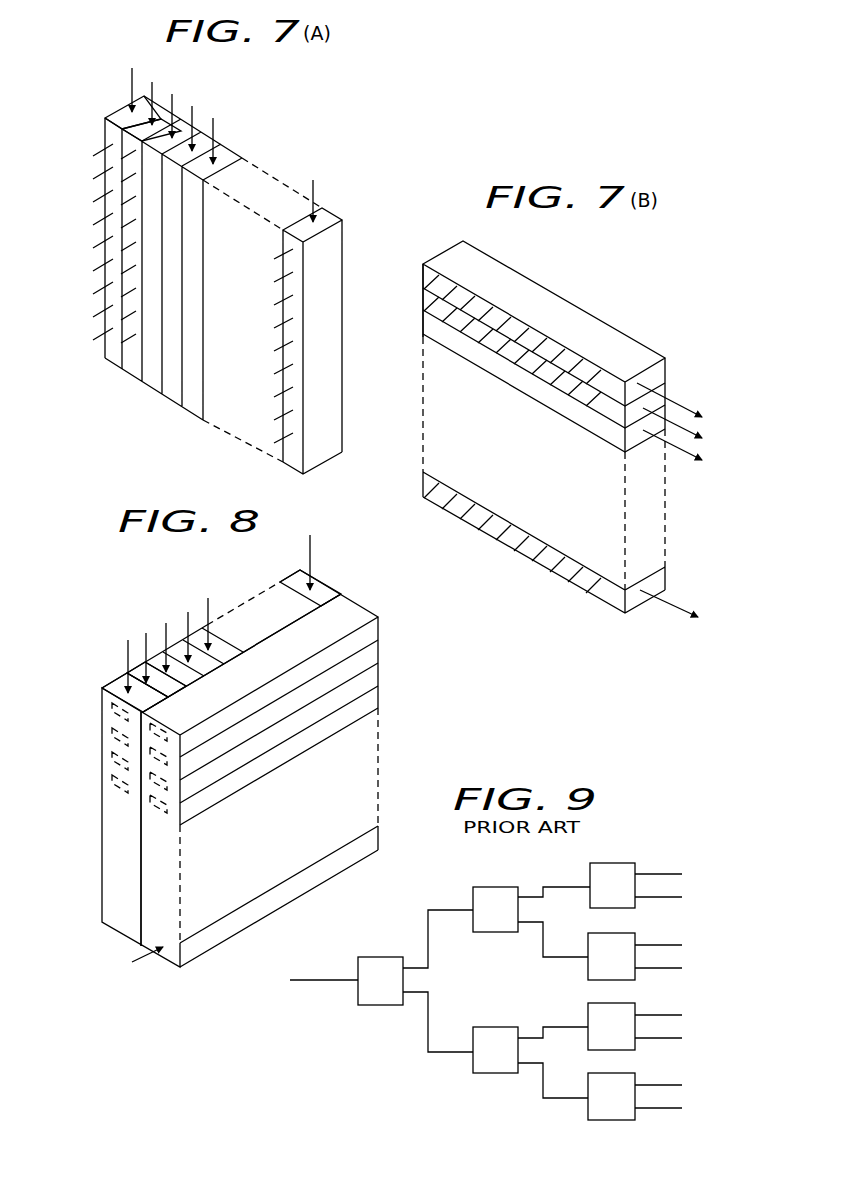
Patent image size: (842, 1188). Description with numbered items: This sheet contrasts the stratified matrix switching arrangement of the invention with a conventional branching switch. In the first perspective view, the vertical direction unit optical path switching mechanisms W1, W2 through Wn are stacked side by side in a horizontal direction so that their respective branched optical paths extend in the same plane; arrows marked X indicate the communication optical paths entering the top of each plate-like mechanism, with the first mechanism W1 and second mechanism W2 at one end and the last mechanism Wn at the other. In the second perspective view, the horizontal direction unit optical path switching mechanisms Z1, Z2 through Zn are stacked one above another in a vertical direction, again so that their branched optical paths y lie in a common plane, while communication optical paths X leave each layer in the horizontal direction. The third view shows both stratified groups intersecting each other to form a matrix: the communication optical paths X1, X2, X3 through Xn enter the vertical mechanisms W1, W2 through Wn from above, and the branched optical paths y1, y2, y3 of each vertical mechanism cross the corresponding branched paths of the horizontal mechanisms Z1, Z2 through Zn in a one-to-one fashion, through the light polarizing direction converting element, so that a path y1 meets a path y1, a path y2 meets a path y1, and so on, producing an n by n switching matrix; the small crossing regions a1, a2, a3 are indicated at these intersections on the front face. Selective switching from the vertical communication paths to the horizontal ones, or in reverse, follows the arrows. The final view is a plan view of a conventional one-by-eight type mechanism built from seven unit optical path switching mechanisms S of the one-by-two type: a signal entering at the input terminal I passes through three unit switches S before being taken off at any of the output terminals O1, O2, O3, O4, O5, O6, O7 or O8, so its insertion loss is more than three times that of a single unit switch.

In FIG. 7A, the vertical direction unit optical path switching mechanism W1 is at (117, 112).
In FIG. 8, the vertical direction unit optical path switching mechanism W1 is at (104, 686).
In FIG. 7A, the vertical direction unit optical path switching mechanism W2 is at (122, 135).
In FIG. 8, the vertical direction unit optical path switching mechanism W2 is at (126, 671).
In FIG. 7A, the vertical direction unit optical path switching mechanism Wn is at (328, 214).
In FIG. 8, the vertical direction unit optical path switching mechanism Wn is at (318, 590).
In FIG. 7A, the communication optical path X is at (224, 136).
In FIG. 7B, the communication optical path X is at (678, 509).
In FIG. 7B, the branched optical path y is at (423, 290).
In FIG. 7B, the horizontal direction unit optical path switching mechanism Z1 is at (667, 362).
In FIG. 8, the horizontal direction unit optical path switching mechanism Z1 is at (383, 628).
In FIG. 7B, the horizontal direction unit optical path switching mechanism Z2 is at (668, 385).
In FIG. 8, the horizontal direction unit optical path switching mechanism Z2 is at (383, 657).
In FIG. 7B, the horizontal direction unit optical path switching mechanism Zn is at (668, 578).
In FIG. 8, the horizontal direction unit optical path switching mechanism Zn is at (383, 837).
In FIG. 8, the communication optical path X1 is at (122, 658).
In FIG. 8, the communication optical path X2 is at (145, 644).
In FIG. 8, the communication optical path X3 is at (181, 633).
In FIG. 8, the communication optical path Xn is at (311, 551).
In FIG. 8, the branched optical path y1 is at (147, 715).
In FIG. 8, the branched optical path y2 is at (137, 740).
In FIG. 8, the branched optical path y3 is at (140, 768).
In FIG. 8, the first unit cell a1 is at (110, 708).
In FIG. 8, the second unit cell a2 is at (110, 733).
In FIG. 8, the third unit cell a3 is at (110, 757).
In FIG. 9, the unit optical path switching mechanism S is at (377, 955).
In FIG. 9, the input terminal I is at (314, 980).
In FIG. 9, the output terminal O1 is at (673, 875).
In FIG. 9, the output terminal O2 is at (673, 899).
In FIG. 9, the output terminal O3 is at (673, 947).
In FIG. 9, the output terminal O4 is at (673, 970).
In FIG. 9, the output terminal O5 is at (673, 1017).
In FIG. 9, the output terminal O6 is at (673, 1040).
In FIG. 9, the output terminal O7 is at (673, 1087).
In FIG. 9, the output terminal O8 is at (673, 1110).